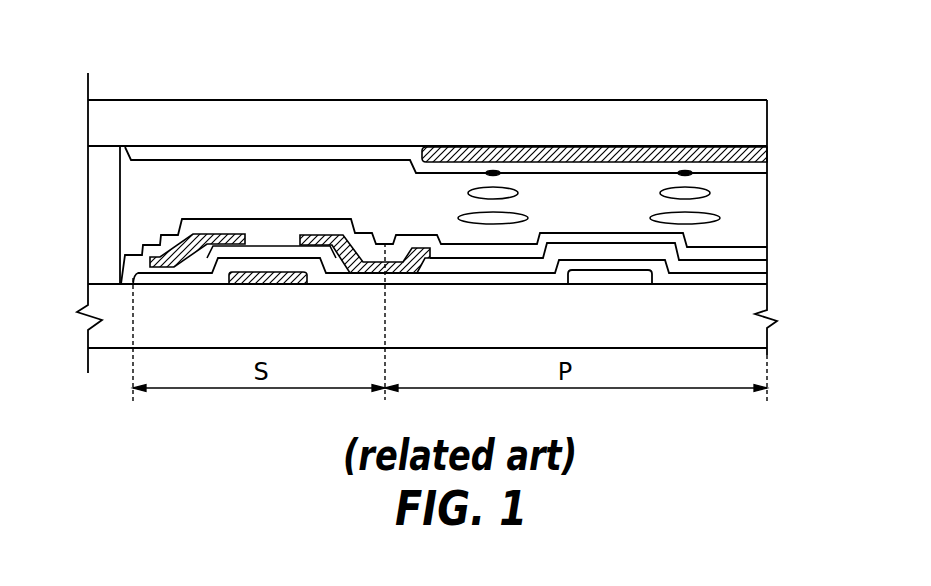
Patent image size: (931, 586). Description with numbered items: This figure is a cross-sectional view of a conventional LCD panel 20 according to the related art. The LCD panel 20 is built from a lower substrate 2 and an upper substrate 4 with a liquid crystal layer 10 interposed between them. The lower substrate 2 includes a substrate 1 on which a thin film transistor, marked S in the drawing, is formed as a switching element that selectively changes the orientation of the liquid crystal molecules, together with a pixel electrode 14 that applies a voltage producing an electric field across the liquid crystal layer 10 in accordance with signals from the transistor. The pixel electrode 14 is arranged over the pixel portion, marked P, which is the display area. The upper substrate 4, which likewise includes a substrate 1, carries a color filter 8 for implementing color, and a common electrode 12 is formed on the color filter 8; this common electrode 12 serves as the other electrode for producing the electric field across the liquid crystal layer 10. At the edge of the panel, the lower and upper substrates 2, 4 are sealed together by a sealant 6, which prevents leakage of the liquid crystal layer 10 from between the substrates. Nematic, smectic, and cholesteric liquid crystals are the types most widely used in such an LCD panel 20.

The LCD panel 20 is at (262, 90).
The substrate 1 is at (460, 128).
The lower substrate 2 is at (780, 247).
The upper substrate 4 is at (780, 100).
The sealant 6 is at (97, 213).
The color filter 8 is at (632, 158).
The liquid crystal layer 10 is at (780, 172).
The common electrode 12 is at (740, 170).
The pixel electrode 14 is at (758, 266).